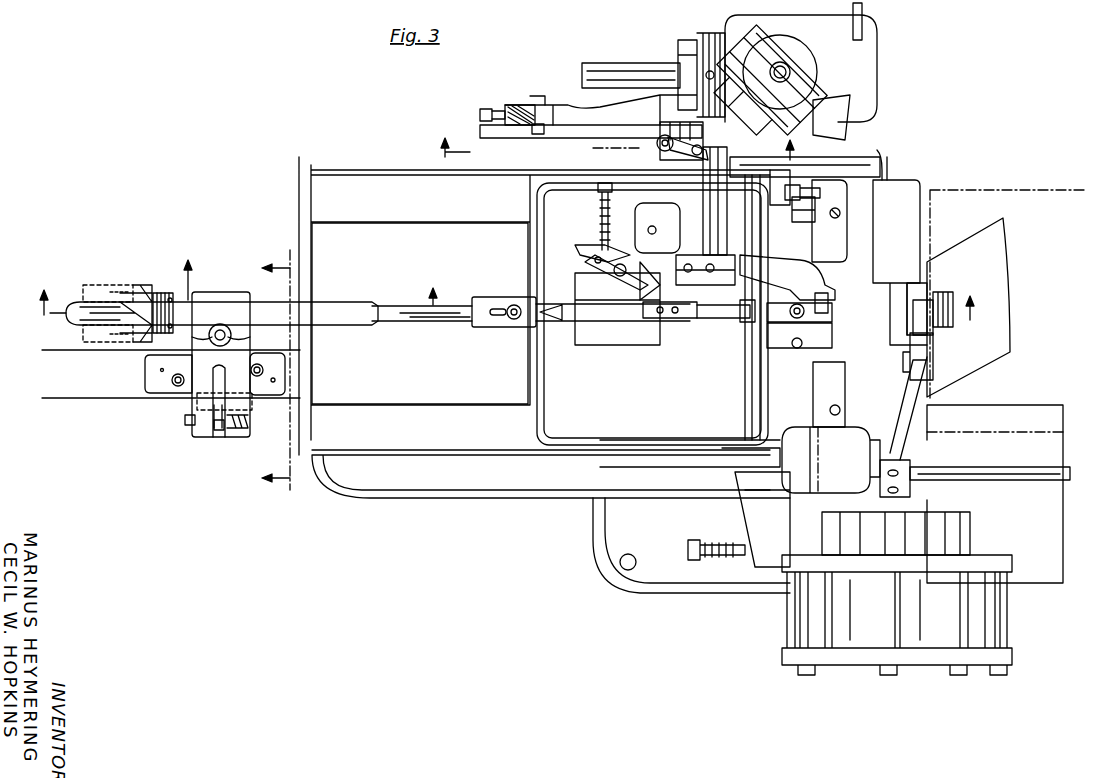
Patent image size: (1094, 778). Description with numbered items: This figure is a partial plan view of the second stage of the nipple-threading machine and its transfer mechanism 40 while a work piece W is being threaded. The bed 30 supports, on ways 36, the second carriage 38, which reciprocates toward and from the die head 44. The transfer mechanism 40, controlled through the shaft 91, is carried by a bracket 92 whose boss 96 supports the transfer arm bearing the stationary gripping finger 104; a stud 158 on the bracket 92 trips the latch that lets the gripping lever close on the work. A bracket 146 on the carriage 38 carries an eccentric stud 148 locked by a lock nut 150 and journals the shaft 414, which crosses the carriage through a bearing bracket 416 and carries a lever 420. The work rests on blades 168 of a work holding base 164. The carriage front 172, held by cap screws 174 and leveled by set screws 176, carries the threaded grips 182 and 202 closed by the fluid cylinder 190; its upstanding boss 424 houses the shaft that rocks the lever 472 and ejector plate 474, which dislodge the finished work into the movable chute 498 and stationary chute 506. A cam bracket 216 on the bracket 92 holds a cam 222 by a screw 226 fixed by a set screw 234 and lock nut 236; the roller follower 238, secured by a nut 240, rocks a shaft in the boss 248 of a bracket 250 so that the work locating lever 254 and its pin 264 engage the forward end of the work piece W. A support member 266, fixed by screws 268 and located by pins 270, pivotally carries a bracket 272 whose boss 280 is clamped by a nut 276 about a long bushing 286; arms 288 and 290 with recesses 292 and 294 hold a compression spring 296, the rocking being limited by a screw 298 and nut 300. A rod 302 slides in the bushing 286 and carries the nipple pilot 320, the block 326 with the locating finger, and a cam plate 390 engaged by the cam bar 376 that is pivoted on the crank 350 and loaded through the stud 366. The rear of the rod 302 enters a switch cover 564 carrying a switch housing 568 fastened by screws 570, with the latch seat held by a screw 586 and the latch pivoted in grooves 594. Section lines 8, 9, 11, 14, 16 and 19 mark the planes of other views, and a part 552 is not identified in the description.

The section line 8 is at (618, 149).
The section line 9 is at (707, 293).
The section line / stop block 11 is at (660, 270).
The section line 14 is at (281, 368).
The section line 16 is at (790, 406).
The section line 19 is at (109, 286).
The bed 30 is at (593, 515).
The ways 36 is at (492, 212).
The second carriage 38 is at (652, 314).
The transfer mechanism 40 is at (790, 22).
The die head 44 is at (975, 185).
The shaft 91 is at (610, 63).
The bracket 92 is at (688, 46).
The boss 96 is at (712, 36).
The stationary gripping finger 104 is at (840, 100).
The bracket 146 is at (820, 165).
The eccentric stud 148 is at (790, 205).
The lock nut 150 is at (800, 190).
The stud 158 is at (862, 15).
The work holding base 164 is at (825, 315).
The work holding blades 168 is at (825, 335).
The carriage front 172 is at (885, 195).
The cap screws 174 is at (810, 222).
The set screws 176 is at (840, 213).
The threaded nipple grip 182 is at (925, 275).
The fluid cylinder 190 is at (897, 615).
The threaded nipple grip 202 is at (925, 330).
The cam bracket 216 is at (572, 108).
The cam 222 is at (565, 138).
The screw 226 is at (536, 104).
The set screw 234 is at (480, 112).
The lock nut 236 is at (530, 125).
The roller cam follower 238 is at (668, 122).
The nut 240 is at (682, 160).
The boss 248 is at (703, 195).
The bracket 250 is at (586, 340).
The work locating lever 254 is at (825, 278).
The pin 264 is at (830, 300).
The support member 266 is at (155, 390).
The screws 268 is at (170, 384).
The locating pins 270 is at (160, 365).
The bracket 272 is at (240, 365).
The nut 276 is at (235, 312).
The boss 280 is at (213, 292).
The long bushing 286 is at (322, 302).
The arm 288 is at (205, 378).
The arm 290 is at (300, 385).
The recess 292 is at (195, 405).
The recess 294 is at (250, 410).
The compression spring 296 is at (215, 428).
The screw 298 is at (185, 425).
The nut 300 is at (222, 432).
The rod 302 is at (418, 325).
The nipple pilot 320 is at (710, 322).
The block 326 is at (672, 325).
The bell crank 350 is at (578, 248).
The stud 366 is at (600, 215).
The cam bar 376 is at (630, 282).
The cam plate 390 is at (478, 297).
The shaft 414 is at (745, 408).
The bearing bracket 416 is at (725, 460).
The lever 420 is at (745, 480).
The boss 424 is at (850, 435).
The lever 472 is at (910, 395).
The ejector plate 474 is at (935, 355).
The chute 498 is at (1003, 235).
The stationary chute 506 is at (990, 494).
The bracket 552 is at (885, 165).
The switch cover 564 is at (150, 293).
The switch housing 568 is at (95, 290).
The screws 570 is at (100, 285).
The screw 586 is at (172, 293).
The grooves 594 is at (133, 302).
The work piece W is at (936, 300).